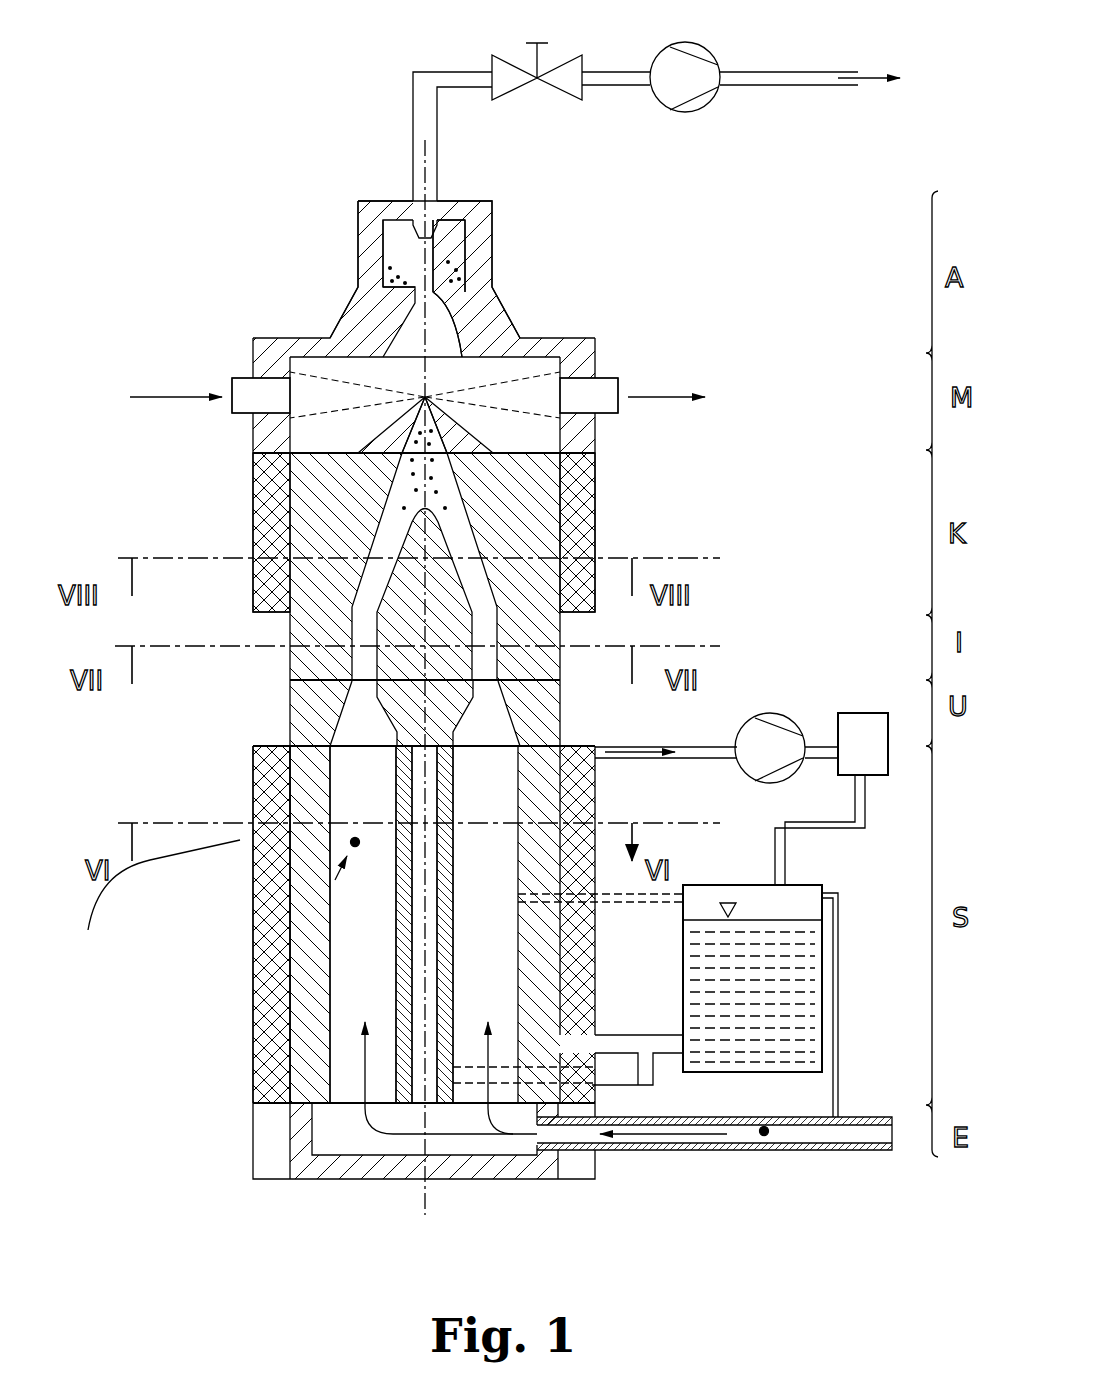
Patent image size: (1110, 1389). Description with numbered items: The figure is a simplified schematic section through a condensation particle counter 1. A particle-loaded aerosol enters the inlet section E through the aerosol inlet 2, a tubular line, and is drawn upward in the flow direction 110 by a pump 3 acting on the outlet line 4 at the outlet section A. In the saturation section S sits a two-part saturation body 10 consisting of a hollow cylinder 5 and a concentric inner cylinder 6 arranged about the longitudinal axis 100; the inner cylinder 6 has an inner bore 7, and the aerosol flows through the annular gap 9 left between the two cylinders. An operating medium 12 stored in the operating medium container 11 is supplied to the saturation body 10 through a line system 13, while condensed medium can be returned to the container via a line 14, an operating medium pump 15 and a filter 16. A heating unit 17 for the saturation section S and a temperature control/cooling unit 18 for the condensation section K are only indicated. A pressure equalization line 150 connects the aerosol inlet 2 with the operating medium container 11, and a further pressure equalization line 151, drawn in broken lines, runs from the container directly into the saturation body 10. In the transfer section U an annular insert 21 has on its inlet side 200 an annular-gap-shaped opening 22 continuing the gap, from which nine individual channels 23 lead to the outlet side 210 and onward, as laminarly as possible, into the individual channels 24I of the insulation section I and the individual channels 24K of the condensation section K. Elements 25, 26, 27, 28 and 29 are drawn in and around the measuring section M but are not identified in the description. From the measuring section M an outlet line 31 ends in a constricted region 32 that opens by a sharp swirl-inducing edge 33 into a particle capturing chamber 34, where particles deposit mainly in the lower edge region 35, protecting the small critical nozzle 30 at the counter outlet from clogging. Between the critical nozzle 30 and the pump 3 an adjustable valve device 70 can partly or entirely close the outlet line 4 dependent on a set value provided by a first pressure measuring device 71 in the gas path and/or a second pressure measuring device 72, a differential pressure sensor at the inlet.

The condensation particle counter 1 is at (735, 432).
The aerosol inlet 2 is at (596, 1150).
The pump 3 is at (708, 103).
The outlet line 4 is at (437, 147).
The hollow cylinder 5 is at (283, 1070).
The inner cylinder 6 is at (358, 1008).
The inner bore 7 is at (383, 965).
The gap 9 is at (287, 1032).
The saturation body 10 is at (393, 865).
The operating medium container 11 is at (822, 910).
The operating medium 12 is at (770, 973).
The line system 13 is at (655, 1057).
The line 14 is at (698, 747).
The operating medium pump 15 is at (778, 715).
The filter 16 is at (853, 713).
The heating unit 17 is at (423, 930).
The temperature control/cooling unit 18 is at (275, 490).
The annular insert 21 is at (362, 730).
The annular-gap-shaped opening 22 is at (362, 748).
The individual channels 23 is at (347, 687).
The individual channels of the condensation section 24K is at (355, 545).
The individual channels of the insulation section 24I is at (365, 640).
The heating block 25 is at (512, 517).
The nozzle cone 26 is at (432, 472).
The gas flow 27 is at (357, 430).
The gas inlet 28 is at (245, 398).
The gas outlet 29 is at (600, 385).
The critical nozzle 30 is at (412, 215).
The outlet line 31 is at (435, 322).
The constricted region 32 is at (410, 287).
The sharp swirl-inducing edge 33 is at (415, 267).
The particle capturing chamber 34 is at (447, 247).
The lower edge region 35 is at (470, 262).
The adjustable valve device 70 is at (492, 62).
The first pressure measuring device 71 is at (350, 843).
The second pressure measuring device 72 is at (764, 1136).
The longitudinal axis 100 is at (421, 1193).
The flow direction 110 is at (312, 1178).
The pressure equalization line 150 is at (838, 1062).
The further pressure equalization line 151 is at (613, 903).
The inlet side 200 is at (363, 755).
The outlet side 210 is at (352, 675).